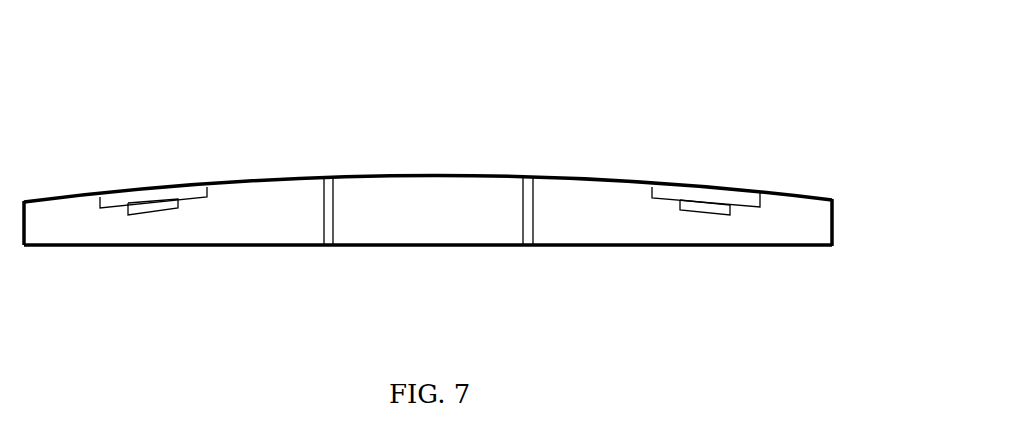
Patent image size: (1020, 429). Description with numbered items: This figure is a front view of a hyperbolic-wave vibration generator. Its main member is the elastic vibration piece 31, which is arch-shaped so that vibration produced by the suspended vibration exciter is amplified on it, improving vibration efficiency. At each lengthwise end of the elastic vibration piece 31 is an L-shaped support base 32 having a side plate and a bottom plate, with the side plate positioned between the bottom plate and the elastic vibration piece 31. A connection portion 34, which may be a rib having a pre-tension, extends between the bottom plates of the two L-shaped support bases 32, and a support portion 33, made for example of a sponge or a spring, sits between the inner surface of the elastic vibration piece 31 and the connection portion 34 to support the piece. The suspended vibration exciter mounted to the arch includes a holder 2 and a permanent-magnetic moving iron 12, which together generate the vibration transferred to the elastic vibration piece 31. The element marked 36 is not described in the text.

The holder 2 is at (157, 200).
The permanent-magnetic moving iron 12 is at (147, 207).
The elastic vibration piece 31 is at (430, 167).
The L-shaped support base 32 is at (832, 247).
The support portion 33 is at (485, 205).
The connection portion 34 is at (597, 247).
The mounting recess 36 is at (693, 200).